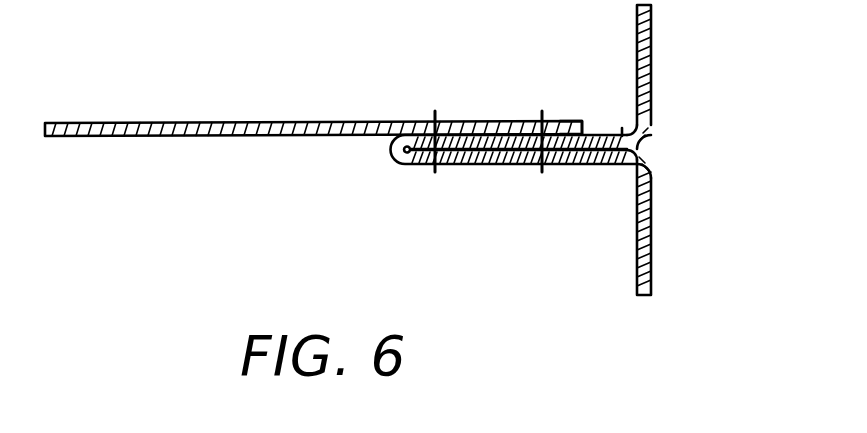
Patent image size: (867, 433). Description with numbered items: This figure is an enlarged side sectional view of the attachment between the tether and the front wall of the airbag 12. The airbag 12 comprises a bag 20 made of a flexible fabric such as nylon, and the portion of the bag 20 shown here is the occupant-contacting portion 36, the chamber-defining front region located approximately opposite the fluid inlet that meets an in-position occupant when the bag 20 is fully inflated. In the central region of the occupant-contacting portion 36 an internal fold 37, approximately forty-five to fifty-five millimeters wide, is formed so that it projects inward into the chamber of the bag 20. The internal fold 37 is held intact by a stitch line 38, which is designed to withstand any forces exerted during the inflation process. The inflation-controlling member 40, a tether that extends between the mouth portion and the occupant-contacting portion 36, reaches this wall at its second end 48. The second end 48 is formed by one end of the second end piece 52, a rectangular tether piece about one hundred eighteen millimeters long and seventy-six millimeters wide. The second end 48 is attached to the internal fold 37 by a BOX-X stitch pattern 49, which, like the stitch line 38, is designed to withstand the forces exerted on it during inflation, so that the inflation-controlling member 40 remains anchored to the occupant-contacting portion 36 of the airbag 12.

The airbag 12 is at (658, 229).
The bag 20 is at (653, 43).
The occupant-contacting portion 36 is at (653, 127).
The internal fold 37 is at (516, 166).
The stitch line 38 is at (620, 168).
The inflation-controlling member 40 is at (125, 120).
The second end 48 is at (586, 72).
The BOX-X stitch pattern 49 is at (542, 115).
The second end piece 52 is at (265, 123).